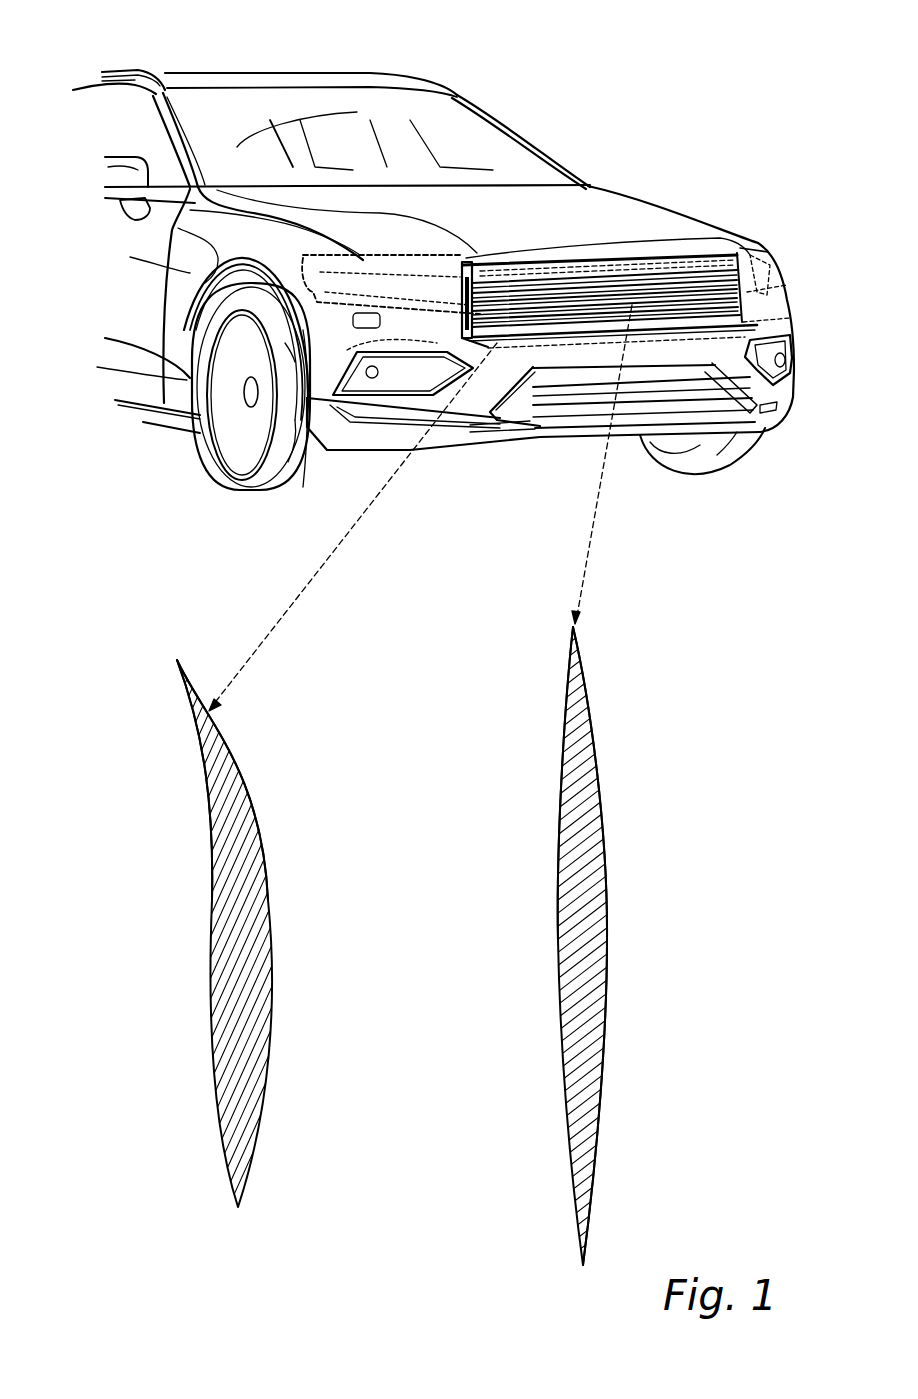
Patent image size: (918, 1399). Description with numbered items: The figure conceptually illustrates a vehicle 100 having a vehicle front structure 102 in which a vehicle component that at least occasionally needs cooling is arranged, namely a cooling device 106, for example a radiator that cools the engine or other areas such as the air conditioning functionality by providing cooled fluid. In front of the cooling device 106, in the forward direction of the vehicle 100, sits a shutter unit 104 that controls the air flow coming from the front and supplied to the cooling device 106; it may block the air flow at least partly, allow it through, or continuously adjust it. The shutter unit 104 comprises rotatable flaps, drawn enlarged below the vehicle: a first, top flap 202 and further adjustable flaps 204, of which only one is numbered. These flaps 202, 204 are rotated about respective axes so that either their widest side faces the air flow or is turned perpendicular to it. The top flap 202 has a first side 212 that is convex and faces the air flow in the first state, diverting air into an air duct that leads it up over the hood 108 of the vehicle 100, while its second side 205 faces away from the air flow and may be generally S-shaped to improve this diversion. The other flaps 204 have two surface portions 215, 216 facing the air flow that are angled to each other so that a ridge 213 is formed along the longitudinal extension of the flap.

The vehicle 100 is at (613, 64).
The vehicle front structure 102 is at (676, 368).
The shutter unit 104 is at (548, 282).
The cooling device 106 is at (458, 328).
The hood 108 is at (628, 207).
The top flap 202 is at (280, 726).
The adjustable flap 204 is at (648, 790).
The second side of the top flap 205 is at (210, 950).
The first side of the top flap 212 is at (253, 832).
The ridge 213 is at (607, 922).
The surface portion 215 is at (604, 866).
The surface portion 216 is at (557, 893).